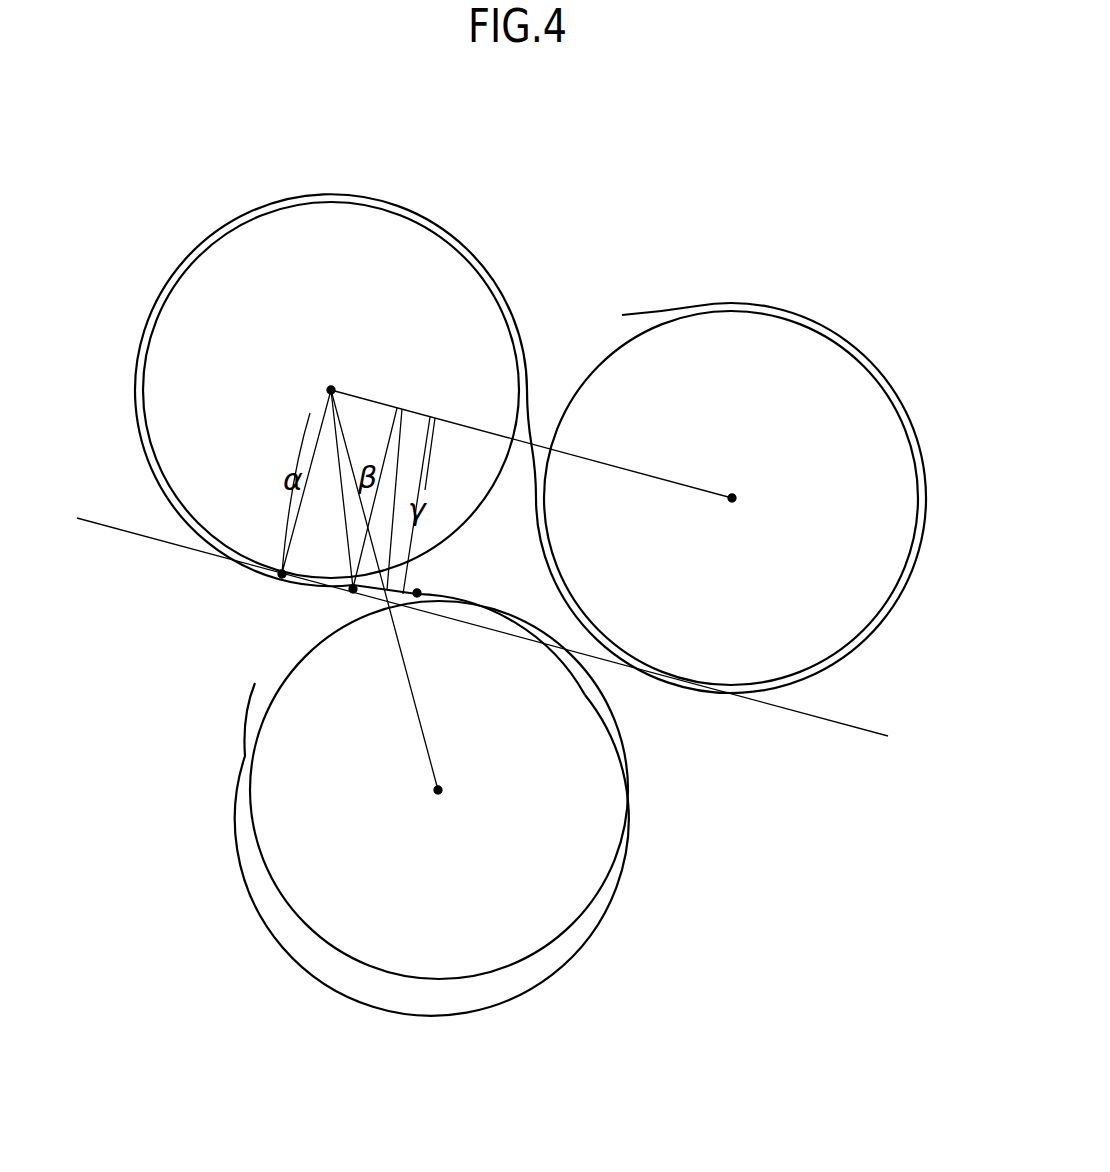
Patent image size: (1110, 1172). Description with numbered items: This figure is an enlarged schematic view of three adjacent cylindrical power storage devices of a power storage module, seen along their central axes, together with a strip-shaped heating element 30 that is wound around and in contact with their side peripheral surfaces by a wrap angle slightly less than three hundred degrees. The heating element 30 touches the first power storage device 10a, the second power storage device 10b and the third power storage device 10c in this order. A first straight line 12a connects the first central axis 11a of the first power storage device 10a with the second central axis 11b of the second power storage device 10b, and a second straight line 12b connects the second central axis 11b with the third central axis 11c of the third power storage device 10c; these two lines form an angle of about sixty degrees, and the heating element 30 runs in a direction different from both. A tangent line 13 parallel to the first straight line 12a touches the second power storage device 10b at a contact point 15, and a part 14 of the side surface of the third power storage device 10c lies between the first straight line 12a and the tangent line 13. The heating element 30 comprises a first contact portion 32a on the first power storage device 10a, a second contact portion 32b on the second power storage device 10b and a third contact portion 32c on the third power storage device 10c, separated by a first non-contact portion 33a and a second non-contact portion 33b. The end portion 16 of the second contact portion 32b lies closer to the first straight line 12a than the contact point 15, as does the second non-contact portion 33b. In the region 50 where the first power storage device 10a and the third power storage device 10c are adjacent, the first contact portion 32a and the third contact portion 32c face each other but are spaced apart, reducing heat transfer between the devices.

The first power storage device 10a is at (762, 345).
The second power storage device 10b is at (262, 250).
The third power storage device 10c is at (332, 905).
The first central axis 11a is at (748, 503).
The second central axis 11b is at (343, 384).
The third central axis 11c is at (454, 796).
The first straight line 12a is at (648, 478).
The second straight line 12b is at (416, 712).
The tangent line 13 is at (822, 733).
The part of the side peripheral surface 14 is at (487, 627).
The contact point 15 is at (278, 576).
The end portion 16 is at (350, 593).
The heating element 30 is at (515, 618).
The first contact portion 32a is at (860, 350).
The second contact portion 32b is at (178, 516).
The third contact portion 32c is at (517, 977).
The first non-contact portion 33a is at (541, 428).
The second non-contact portion 33b is at (370, 602).
The region 50 is at (662, 723).